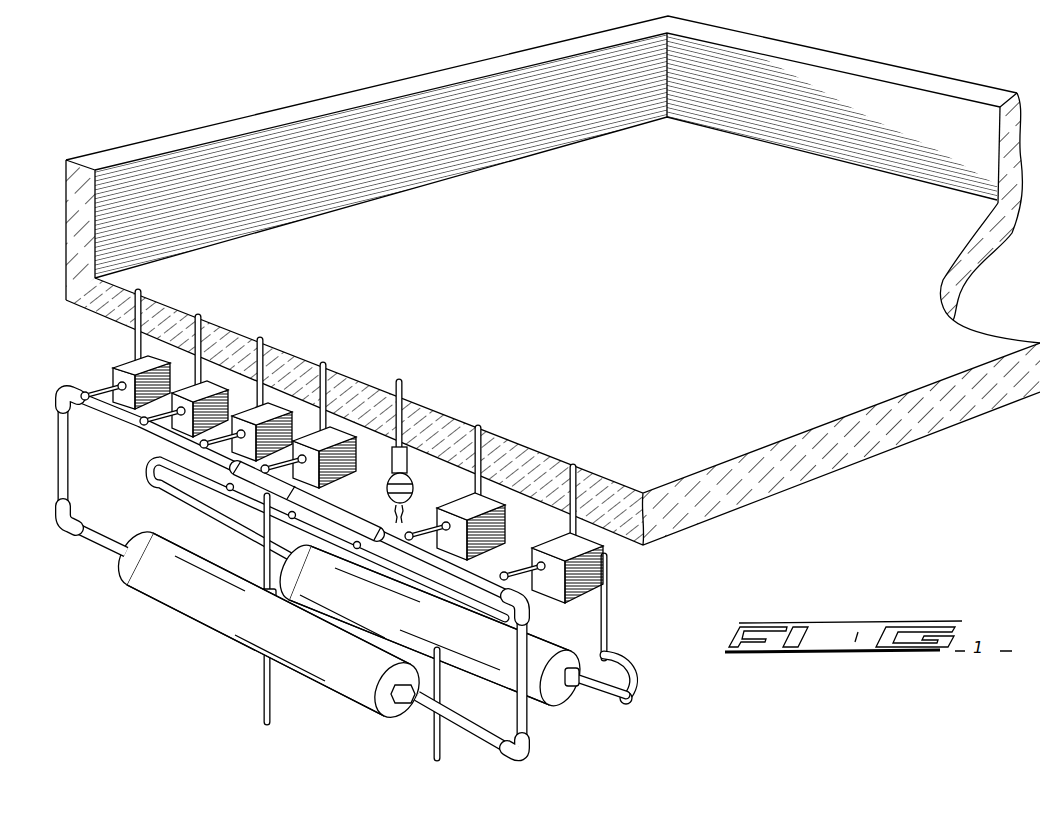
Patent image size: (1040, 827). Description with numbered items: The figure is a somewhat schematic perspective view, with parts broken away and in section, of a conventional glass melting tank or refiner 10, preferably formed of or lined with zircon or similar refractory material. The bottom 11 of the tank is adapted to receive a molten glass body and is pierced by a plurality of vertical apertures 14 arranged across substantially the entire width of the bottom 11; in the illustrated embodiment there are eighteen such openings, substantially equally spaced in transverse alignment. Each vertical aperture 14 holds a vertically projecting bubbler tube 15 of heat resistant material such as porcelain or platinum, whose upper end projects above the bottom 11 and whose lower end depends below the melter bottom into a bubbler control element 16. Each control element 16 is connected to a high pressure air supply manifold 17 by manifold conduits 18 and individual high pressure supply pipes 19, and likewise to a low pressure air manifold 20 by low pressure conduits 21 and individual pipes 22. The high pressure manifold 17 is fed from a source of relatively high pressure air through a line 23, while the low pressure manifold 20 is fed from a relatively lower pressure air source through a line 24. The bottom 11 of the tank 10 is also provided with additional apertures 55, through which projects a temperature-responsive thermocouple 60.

The glass melting tank 10 is at (898, 27).
The bottom 11 is at (655, 281).
The vertical apertures 14 is at (198, 322).
The bubbler tube 15 is at (198, 357).
The bubbler control element 16 is at (97, 360).
The high pressure air supply manifold 17 is at (563, 700).
The manifold conduits 18 is at (560, 650).
The high pressure supply pipes 19 is at (610, 630).
The low pressure air manifold 20 is at (160, 593).
The low pressure conduits 21 is at (341, 577).
The individual pipes 22 is at (100, 384).
The line 23 is at (432, 742).
The line 24 is at (260, 699).
The additional apertures 55 is at (414, 350).
The thermocouple 60 is at (417, 432).